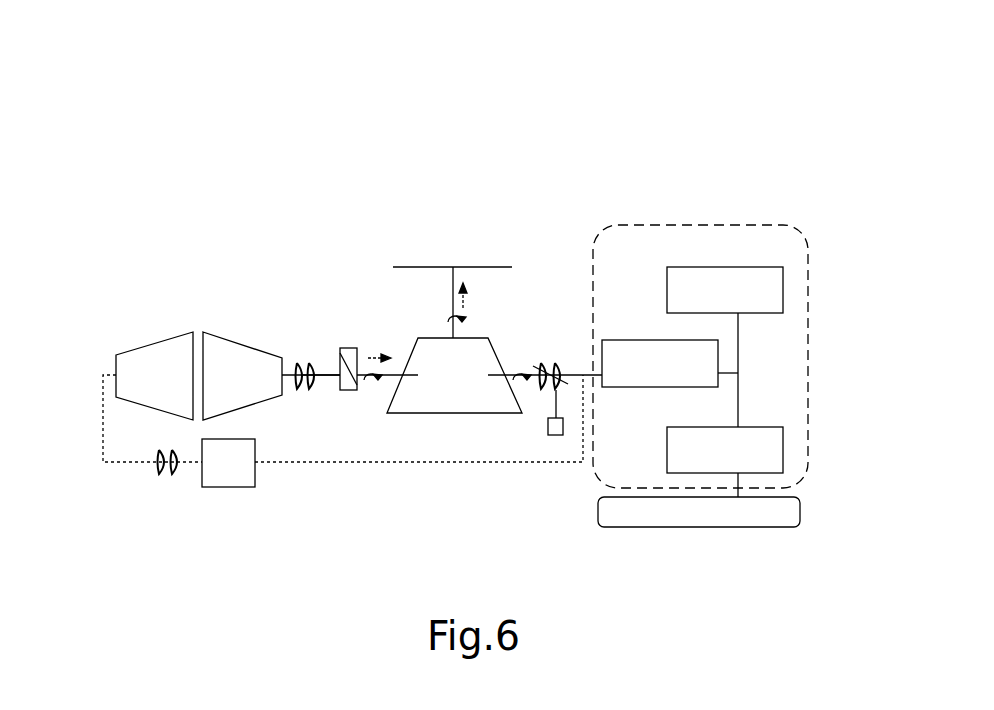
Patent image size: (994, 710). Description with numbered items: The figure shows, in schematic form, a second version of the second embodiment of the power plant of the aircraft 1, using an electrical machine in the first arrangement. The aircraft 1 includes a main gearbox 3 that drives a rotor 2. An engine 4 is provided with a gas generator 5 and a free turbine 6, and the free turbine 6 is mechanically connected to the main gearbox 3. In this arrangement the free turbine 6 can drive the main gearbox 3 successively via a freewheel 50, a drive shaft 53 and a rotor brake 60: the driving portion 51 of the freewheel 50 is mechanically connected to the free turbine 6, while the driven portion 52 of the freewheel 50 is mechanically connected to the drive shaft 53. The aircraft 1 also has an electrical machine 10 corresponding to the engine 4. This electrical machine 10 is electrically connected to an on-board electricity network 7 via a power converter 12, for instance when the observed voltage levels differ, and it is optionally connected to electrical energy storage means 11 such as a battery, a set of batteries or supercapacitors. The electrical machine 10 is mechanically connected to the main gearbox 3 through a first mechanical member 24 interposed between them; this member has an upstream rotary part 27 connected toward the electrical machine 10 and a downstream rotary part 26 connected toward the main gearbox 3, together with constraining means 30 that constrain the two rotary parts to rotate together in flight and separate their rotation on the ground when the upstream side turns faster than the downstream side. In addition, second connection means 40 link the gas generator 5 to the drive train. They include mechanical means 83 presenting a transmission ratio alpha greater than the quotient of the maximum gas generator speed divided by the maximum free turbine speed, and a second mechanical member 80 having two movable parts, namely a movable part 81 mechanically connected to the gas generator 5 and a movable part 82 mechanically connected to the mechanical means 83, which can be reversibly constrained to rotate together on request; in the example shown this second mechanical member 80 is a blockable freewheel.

The aircraft 1 is at (714, 126).
The rotor 2 is at (469, 250).
The main gearbox 3 is at (454, 375).
The engine 4 is at (144, 302).
The gas generator 5 is at (154, 376).
The free turbine 6 is at (242, 376).
The electricity network 7 is at (697, 528).
The electrical machine 10 is at (660, 363).
The electrical energy storage means 11 is at (725, 290).
The power converter 12 is at (725, 450).
The first mechanical member 24 is at (547, 305).
The downstream rotary part 26 is at (540, 362).
The upstream rotary part 27 is at (573, 347).
The constraining means 30 is at (548, 430).
The second connection means 40 is at (315, 480).
The freewheel 50 is at (304, 367).
The driving portion 51 is at (298, 390).
The driven portion 52 is at (310, 390).
The drive shaft 53 is at (323, 372).
The rotor brake 60 is at (350, 348).
The second mechanical member 80 is at (158, 514).
The movable part 81 is at (155, 470).
The movable part 82 is at (201, 488).
The mechanical means 83 is at (255, 479).